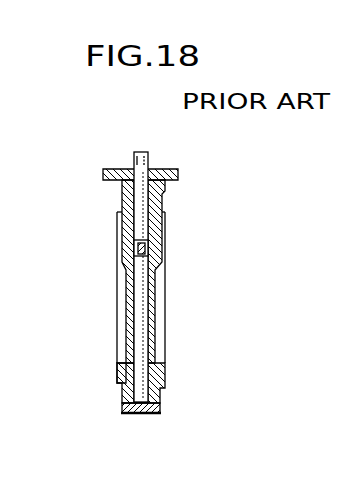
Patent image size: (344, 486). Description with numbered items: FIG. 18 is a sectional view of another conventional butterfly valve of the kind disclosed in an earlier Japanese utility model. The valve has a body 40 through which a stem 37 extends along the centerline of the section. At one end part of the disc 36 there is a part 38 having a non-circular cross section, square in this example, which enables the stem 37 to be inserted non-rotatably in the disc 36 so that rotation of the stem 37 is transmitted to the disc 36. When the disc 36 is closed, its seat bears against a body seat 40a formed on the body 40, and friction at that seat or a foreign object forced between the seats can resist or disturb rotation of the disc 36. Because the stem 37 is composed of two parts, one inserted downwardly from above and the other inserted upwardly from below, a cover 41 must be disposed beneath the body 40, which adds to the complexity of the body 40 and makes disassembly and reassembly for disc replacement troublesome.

The disc 36 is at (150, 336).
The stem 37 is at (143, 201).
The part having a non-circular cross section 38 is at (137, 247).
The body 40 is at (160, 391).
The body seat 40a is at (124, 372).
The cover 41 is at (140, 413).